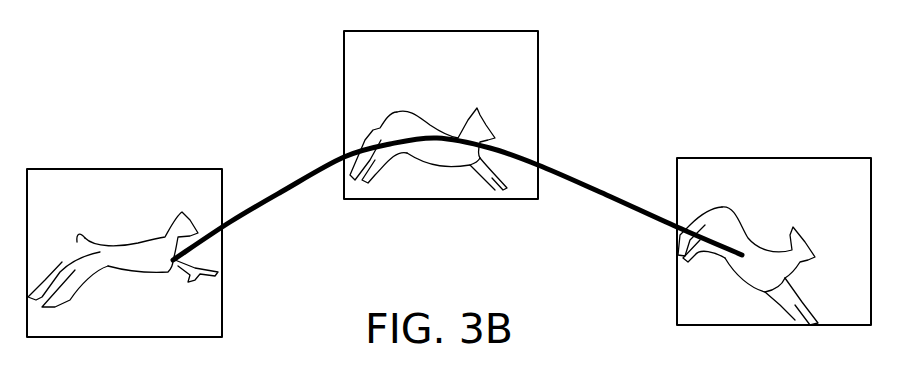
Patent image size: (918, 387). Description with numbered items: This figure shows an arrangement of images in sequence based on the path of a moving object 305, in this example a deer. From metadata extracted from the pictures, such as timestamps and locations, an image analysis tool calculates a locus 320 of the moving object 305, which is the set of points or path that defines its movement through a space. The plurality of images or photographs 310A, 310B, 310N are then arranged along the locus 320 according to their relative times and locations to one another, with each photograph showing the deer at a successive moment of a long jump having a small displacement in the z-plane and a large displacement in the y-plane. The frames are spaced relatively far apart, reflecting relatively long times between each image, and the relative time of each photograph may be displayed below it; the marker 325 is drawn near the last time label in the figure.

The moving object 305 is at (128, 250).
The image or photograph 310A is at (125, 169).
The image or photograph 310B is at (344, 97).
The image or photograph 310N is at (780, 158).
The locus 320 is at (587, 180).
The time TN label 325 is at (785, 347).